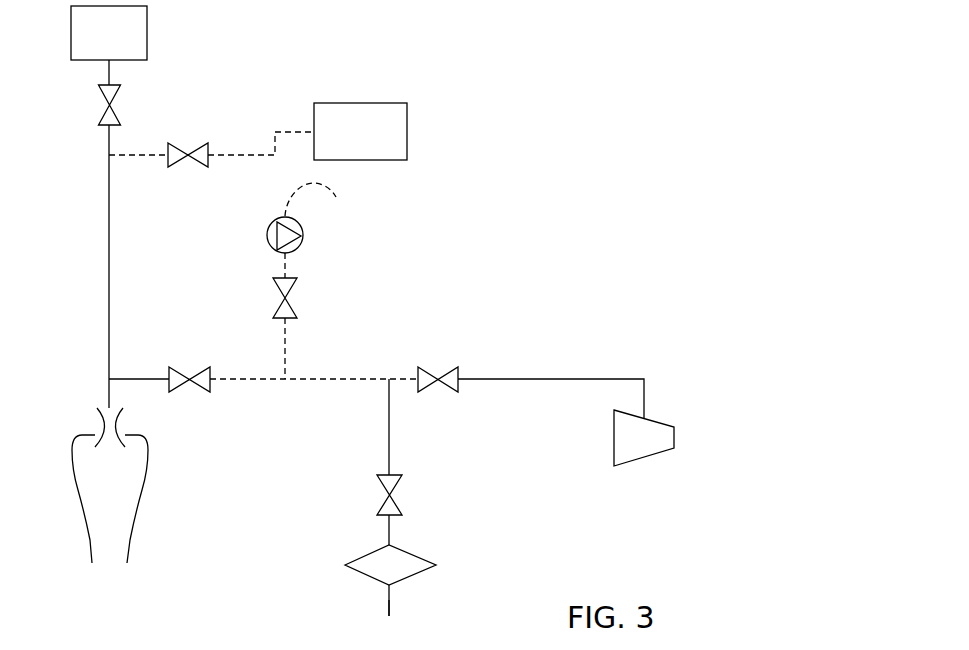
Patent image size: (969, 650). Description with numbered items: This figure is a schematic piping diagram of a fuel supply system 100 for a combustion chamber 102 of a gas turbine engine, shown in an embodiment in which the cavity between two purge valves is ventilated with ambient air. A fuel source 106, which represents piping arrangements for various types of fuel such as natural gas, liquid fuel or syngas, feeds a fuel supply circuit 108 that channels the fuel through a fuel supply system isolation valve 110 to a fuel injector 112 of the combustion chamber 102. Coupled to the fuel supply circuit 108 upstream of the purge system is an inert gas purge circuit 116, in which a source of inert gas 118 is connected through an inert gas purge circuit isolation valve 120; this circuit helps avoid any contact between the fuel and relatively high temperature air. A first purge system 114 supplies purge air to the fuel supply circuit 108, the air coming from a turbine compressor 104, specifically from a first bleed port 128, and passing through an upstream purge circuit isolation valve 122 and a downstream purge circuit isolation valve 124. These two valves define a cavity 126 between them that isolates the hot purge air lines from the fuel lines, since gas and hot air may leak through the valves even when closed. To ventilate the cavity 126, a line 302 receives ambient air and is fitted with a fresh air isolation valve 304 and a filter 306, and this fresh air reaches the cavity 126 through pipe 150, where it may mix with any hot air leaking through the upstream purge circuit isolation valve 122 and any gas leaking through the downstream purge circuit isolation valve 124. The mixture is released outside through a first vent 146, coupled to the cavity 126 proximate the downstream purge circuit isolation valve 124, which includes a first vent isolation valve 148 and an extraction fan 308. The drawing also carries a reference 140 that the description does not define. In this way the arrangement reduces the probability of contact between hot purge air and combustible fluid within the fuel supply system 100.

The fuel supply system 100 is at (503, 143).
The combustion chamber 102 is at (125, 506).
The turbine compressor 104 is at (674, 436).
The fuel source 106 is at (147, 30).
The fuel supply circuit 108 is at (108, 268).
The fuel supply system isolation valve 110 is at (98, 118).
The fuel injector 112 is at (100, 418).
The first purge system 114 is at (188, 329).
The inert gas purge circuit 116 is at (150, 128).
The source of inert gas 118 is at (407, 132).
The inert gas purge circuit isolation valve 120 is at (208, 148).
The upstream purge circuit isolation valve 122 is at (420, 370).
The downstream purge circuit isolation valve 124 is at (172, 367).
The cavity 126 is at (342, 363).
The first bleed port 128 is at (647, 416).
The drain assembly 140 is at (360, 491).
The first vent 146 is at (283, 347).
The first vent isolation valve 148 is at (297, 290).
The pipe 150 is at (392, 428).
The line 302 is at (388, 600).
The fresh air isolation valve 304 is at (402, 478).
The filter 306 is at (416, 558).
The extraction fan 308 is at (267, 235).